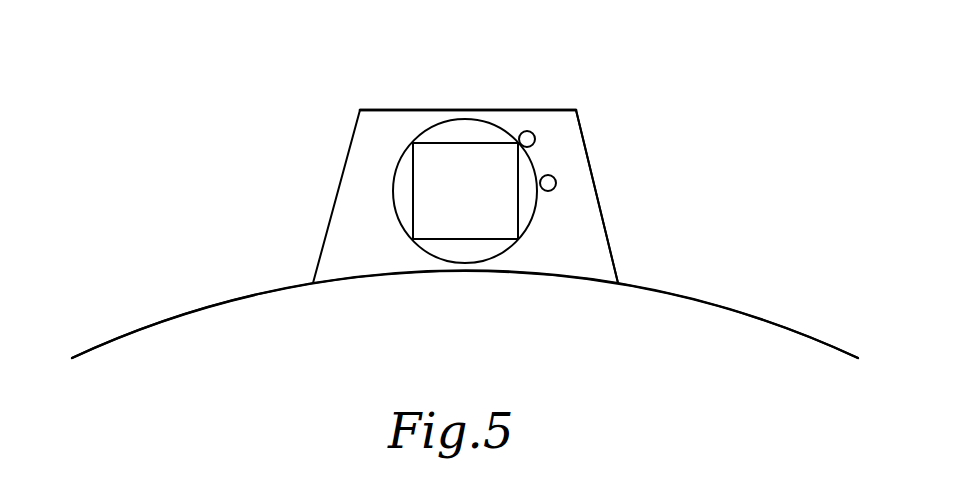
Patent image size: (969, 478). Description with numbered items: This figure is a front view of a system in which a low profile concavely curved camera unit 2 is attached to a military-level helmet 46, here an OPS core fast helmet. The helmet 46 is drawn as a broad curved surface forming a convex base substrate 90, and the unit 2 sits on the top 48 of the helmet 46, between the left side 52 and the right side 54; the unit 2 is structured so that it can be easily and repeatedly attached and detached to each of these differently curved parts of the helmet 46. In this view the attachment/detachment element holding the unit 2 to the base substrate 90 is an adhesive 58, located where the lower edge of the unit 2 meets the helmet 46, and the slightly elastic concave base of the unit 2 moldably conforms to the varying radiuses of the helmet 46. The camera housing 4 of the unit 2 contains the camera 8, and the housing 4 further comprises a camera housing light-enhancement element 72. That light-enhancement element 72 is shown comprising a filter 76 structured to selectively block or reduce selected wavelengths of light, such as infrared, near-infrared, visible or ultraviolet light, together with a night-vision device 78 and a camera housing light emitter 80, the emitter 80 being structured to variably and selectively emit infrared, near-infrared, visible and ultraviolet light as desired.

The camera 8 is at (508, 103).
The low profile concavely curved camera unit 2 is at (577, 108).
The camera housing 4 is at (360, 110).
The military-level helmet 46 is at (763, 319).
The top of the helmet 48 is at (474, 271).
The left side of the helmet 52 is at (807, 334).
The right side of the helmet 54 is at (193, 311).
The adhesive 58 is at (618, 282).
The camera housing light-enhancement element 72 is at (413, 170).
The filter 76 is at (413, 238).
The night-vision device 78 is at (536, 141).
The camera housing light emitter 80 is at (555, 188).
The convex base substrate 90 is at (387, 277).